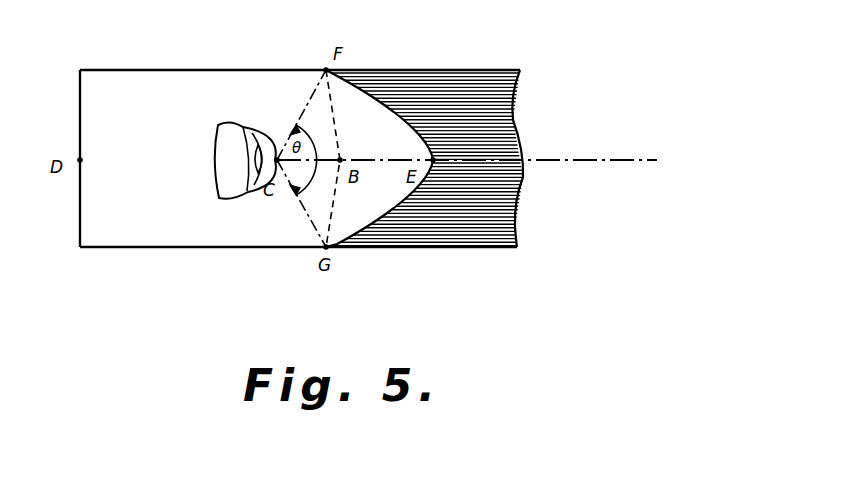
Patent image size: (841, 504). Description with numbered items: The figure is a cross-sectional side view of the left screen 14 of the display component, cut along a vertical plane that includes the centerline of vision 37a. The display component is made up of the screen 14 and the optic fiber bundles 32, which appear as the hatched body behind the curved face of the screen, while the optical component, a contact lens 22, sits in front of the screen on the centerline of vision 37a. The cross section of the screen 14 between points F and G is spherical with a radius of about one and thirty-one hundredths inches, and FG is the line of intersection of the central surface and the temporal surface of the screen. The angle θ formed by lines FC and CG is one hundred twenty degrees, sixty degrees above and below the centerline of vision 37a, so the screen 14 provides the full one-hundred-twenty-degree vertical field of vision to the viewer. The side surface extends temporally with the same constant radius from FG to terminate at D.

The screen 14 is at (190, 236).
The contact lens 22 is at (265, 136).
The optic fiber bundle 32 is at (465, 82).
The centerline of vision 37a is at (588, 161).